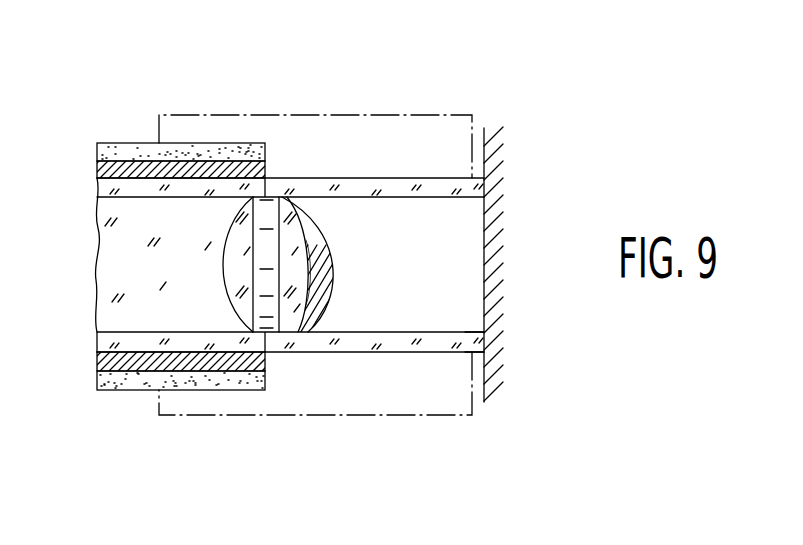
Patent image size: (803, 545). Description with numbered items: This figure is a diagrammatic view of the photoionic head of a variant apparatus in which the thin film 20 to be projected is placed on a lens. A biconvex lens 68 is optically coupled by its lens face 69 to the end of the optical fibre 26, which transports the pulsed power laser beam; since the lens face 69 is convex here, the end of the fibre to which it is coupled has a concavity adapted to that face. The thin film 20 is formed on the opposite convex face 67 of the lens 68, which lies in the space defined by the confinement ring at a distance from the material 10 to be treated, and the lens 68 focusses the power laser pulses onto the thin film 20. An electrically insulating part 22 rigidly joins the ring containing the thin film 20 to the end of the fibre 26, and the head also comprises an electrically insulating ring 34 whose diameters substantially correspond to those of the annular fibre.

The material 10 is at (493, 164).
The thin film 20 is at (322, 240).
The electrically insulating part 22 is at (338, 113).
The optical fibre 26 is at (81, 210).
The electrically insulating ring 34 is at (474, 343).
The convex face 67 is at (307, 331).
The convex lens 68 is at (316, 281).
The lens face 69 is at (224, 289).